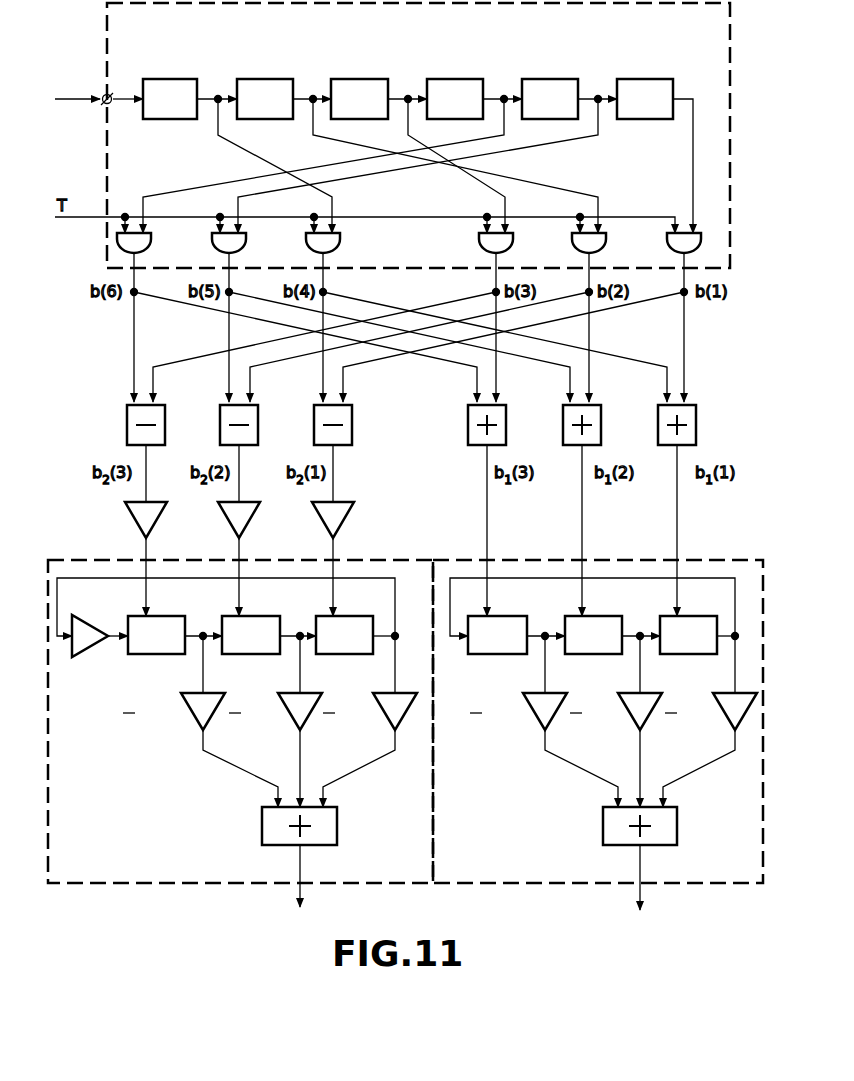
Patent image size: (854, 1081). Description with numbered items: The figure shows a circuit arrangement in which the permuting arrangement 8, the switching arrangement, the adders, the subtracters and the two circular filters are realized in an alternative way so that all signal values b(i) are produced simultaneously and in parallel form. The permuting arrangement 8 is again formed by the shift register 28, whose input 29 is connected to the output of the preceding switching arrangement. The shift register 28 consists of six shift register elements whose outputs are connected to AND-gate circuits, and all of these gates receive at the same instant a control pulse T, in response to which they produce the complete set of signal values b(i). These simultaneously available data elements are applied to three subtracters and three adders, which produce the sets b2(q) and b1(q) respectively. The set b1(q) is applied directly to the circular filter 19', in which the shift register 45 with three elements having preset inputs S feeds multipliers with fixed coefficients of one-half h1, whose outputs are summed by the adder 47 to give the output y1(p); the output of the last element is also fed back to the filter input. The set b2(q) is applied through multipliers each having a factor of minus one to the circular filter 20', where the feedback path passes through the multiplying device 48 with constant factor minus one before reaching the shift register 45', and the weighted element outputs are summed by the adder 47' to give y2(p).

The permuting arrangement 8 is at (733, 95).
The input of the shift register 29 is at (104, 94).
The shift register 28 is at (411, 36).
The circular filter 20' is at (240, 721).
The circular filter 19' is at (598, 722).
The shift register 45 is at (598, 618).
The shift register 45' is at (240, 619).
The multiplying device 48 is at (90, 649).
The adder 47' is at (275, 826).
The adder 47 is at (618, 826).